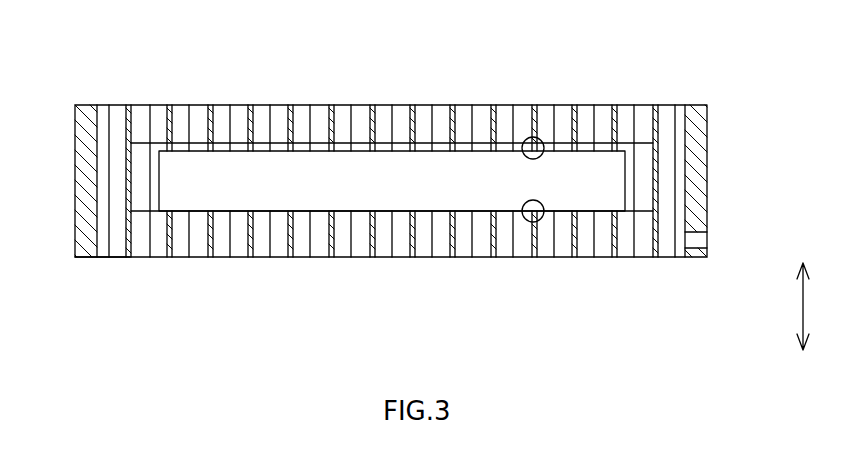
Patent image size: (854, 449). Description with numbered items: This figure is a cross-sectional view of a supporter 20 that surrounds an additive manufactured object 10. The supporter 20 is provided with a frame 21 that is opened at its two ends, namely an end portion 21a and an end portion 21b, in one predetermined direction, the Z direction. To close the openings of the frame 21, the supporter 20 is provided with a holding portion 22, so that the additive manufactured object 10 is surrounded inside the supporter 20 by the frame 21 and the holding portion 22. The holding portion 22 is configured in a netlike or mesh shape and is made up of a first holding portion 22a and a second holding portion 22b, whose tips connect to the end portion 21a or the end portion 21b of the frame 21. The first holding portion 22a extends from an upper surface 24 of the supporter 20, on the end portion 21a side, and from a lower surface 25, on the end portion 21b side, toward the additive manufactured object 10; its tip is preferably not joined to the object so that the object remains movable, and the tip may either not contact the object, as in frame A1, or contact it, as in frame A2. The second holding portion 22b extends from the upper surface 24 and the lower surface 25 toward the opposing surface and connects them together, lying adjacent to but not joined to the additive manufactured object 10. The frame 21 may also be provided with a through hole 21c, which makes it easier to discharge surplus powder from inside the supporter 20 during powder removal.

The additive manufactured object 10 is at (342, 156).
The supporter 20 is at (564, 91).
The frame 21 is at (708, 118).
The end portion 21a is at (88, 105).
The end portion 21b is at (90, 258).
The through hole 21c is at (693, 235).
The holding portion 22 is at (200, 52).
The first holding portion 22a is at (168, 105).
The second holding portion 22b is at (127, 105).
The upper surface 24 is at (643, 105).
The lower surface 25 is at (643, 258).
The frame A1 is at (527, 138).
The frame A2 is at (525, 222).
The Z direction Z is at (813, 306).